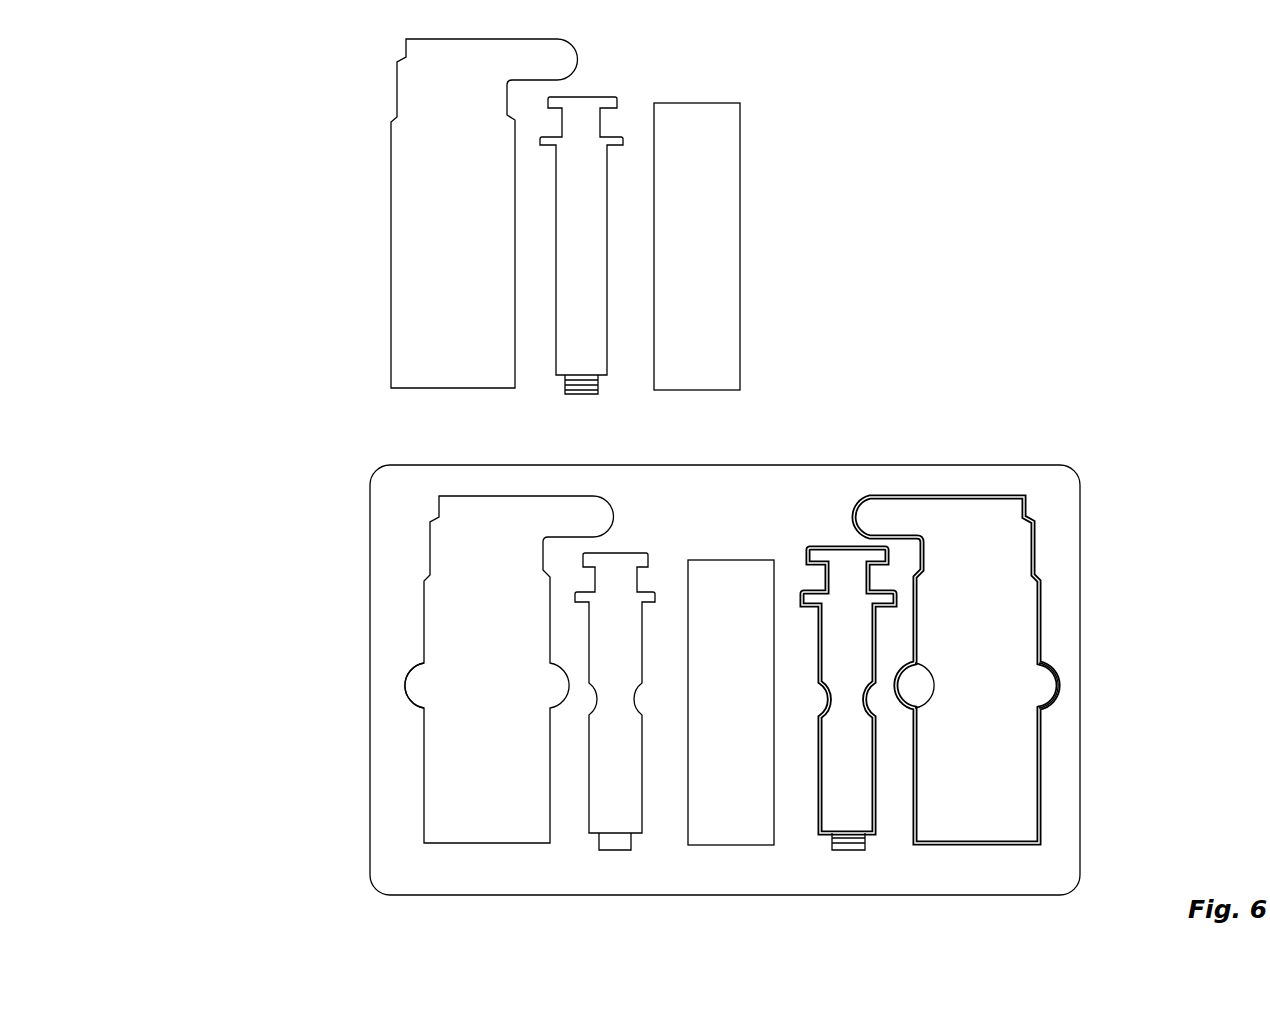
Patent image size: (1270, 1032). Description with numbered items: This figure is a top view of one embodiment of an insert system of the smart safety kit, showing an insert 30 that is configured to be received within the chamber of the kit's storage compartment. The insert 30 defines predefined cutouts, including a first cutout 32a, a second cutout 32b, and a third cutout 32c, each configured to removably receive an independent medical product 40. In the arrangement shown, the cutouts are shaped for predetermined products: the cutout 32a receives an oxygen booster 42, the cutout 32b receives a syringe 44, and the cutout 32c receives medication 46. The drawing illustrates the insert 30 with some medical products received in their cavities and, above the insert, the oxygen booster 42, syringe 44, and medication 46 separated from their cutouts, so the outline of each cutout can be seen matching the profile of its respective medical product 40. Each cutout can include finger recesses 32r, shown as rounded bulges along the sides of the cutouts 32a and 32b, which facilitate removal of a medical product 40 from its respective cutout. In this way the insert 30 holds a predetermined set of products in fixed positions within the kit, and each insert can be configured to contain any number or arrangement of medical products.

The insert 30 is at (1067, 751).
The cutout 32a is at (494, 822).
The cutout 32b is at (612, 817).
The cutout 32c is at (725, 829).
The finger recess 32r is at (418, 683).
The medical product 40 is at (265, 133).
The oxygen booster 42 is at (405, 212).
The syringe 44 is at (595, 97).
The medication 46 is at (700, 103).